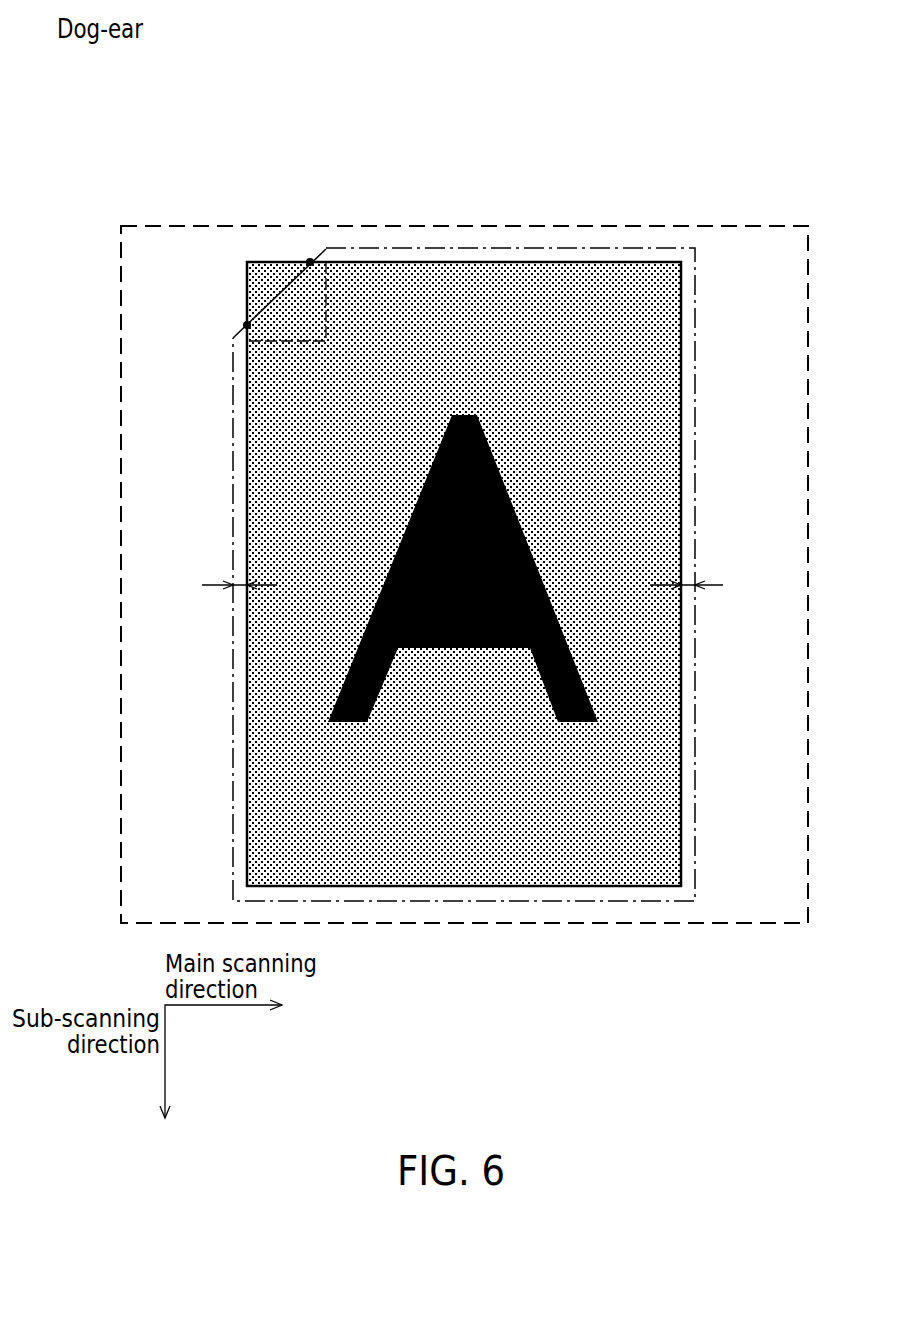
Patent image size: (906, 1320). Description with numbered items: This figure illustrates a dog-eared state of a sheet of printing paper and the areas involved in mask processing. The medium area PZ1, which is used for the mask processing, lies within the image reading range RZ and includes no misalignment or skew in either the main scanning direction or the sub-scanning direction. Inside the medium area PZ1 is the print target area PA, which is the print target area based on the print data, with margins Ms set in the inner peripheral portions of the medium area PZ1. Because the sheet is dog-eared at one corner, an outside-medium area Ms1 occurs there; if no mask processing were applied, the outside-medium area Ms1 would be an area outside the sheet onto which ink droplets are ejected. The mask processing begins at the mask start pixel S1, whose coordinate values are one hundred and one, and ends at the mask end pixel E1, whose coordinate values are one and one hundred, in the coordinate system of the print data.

The image reading range RZ is at (672, 226).
The medium area PZ1 is at (492, 248).
The print target area PA is at (568, 262).
The outside-medium area Ms1 is at (280, 260).
The mask end pixel E1 is at (247, 325).
The mask start pixel S1 is at (310, 262).
The margin Ms is at (240, 584).